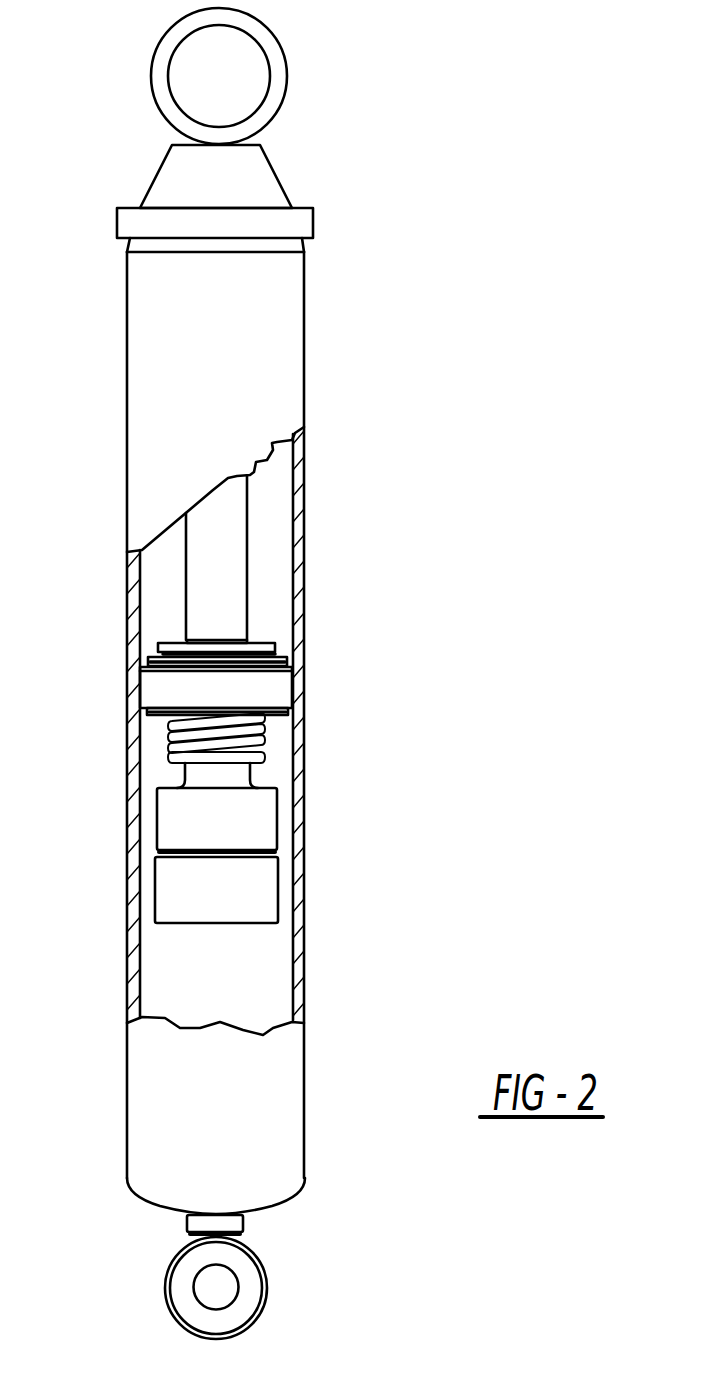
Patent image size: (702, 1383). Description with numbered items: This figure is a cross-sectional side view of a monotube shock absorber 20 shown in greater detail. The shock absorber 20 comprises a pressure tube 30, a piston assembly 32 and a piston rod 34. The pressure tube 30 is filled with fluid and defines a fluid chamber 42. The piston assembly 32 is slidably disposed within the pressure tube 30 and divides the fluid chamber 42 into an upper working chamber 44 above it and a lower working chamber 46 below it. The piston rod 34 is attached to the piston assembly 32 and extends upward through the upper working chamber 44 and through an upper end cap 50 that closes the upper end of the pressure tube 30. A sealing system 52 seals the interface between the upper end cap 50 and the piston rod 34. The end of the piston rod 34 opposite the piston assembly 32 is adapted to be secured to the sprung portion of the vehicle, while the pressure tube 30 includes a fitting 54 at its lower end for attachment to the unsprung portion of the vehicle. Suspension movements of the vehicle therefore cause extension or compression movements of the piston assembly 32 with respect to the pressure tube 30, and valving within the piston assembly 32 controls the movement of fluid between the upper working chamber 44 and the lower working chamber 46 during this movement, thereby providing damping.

The shock absorber 20 is at (405, 205).
The pressure tube 30 is at (304, 468).
The piston assembly 32 is at (260, 685).
The piston rod 34 is at (222, 572).
The fluid chamber 42 is at (270, 517).
The upper working chamber 44 is at (165, 603).
The lower working chamber 46 is at (238, 988).
The upper end cap 50 is at (272, 168).
The sealing system 52 is at (117, 222).
The fitting 54 is at (167, 1278).